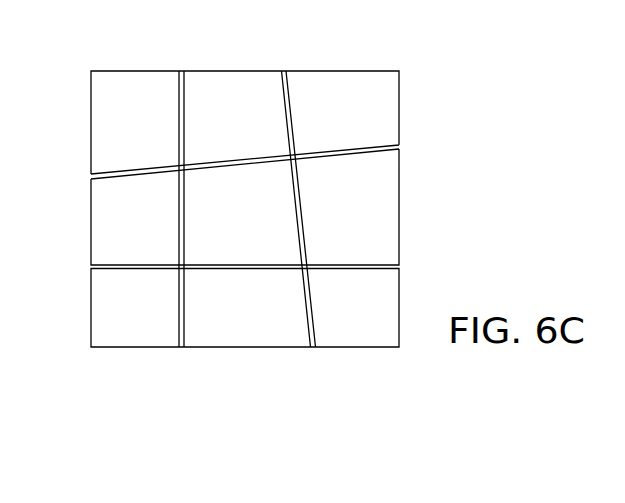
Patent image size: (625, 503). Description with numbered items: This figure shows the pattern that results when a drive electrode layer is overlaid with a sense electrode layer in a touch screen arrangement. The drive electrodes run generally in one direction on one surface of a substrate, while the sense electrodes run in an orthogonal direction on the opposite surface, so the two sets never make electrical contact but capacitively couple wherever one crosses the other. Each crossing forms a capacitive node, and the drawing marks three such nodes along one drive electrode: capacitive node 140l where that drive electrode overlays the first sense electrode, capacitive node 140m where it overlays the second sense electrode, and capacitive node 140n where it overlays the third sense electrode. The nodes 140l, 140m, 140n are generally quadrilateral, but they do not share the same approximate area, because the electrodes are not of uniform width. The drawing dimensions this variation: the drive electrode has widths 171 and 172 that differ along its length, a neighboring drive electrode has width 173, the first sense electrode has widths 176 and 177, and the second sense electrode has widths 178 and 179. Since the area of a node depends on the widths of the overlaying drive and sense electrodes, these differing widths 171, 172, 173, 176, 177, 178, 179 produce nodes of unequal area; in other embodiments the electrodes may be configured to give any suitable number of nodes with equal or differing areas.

The capacitive node 140l is at (357, 85).
The capacitive node 140m is at (370, 190).
The capacitive node 140n is at (375, 297).
The width of drive electrode 171 is at (399, 53).
The width of drive electrode 172 is at (399, 366).
The width of drive electrode 173 is at (280, 53).
The width of sense electrode 176 is at (70, 71).
The width of sense electrode 177 is at (418, 71).
The width of sense electrode 178 is at (70, 178).
The width of sense electrode 179 is at (423, 263).